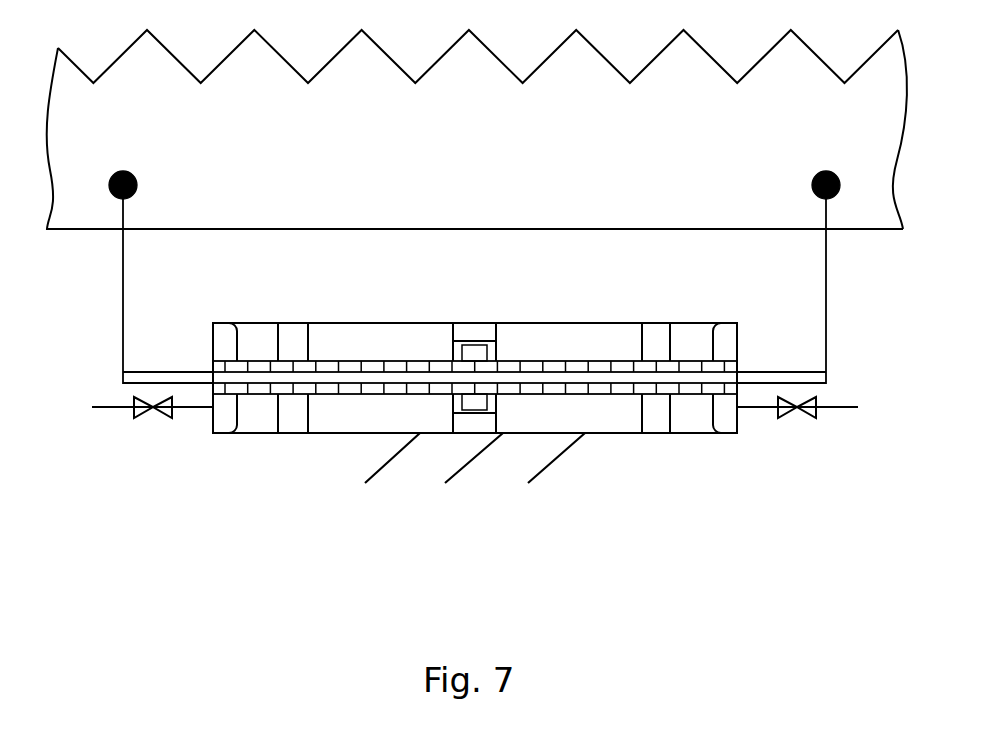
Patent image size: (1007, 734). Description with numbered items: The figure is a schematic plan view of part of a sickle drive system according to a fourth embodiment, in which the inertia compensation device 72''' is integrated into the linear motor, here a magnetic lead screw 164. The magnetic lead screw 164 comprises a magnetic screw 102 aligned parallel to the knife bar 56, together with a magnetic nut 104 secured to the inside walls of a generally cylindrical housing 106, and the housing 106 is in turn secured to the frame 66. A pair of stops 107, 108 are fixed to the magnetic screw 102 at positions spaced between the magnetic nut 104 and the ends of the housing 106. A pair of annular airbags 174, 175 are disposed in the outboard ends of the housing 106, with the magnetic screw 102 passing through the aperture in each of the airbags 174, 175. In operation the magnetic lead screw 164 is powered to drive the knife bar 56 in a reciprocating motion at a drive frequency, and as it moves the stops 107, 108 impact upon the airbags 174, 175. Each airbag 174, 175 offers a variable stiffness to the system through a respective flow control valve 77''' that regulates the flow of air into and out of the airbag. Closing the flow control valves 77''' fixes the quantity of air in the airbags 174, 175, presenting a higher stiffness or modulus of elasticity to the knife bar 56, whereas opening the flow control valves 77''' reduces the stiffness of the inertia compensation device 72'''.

The knife bar 56 is at (883, 130).
The inertia compensation device 72''' is at (475, 451).
The magnetic lead screw 164 is at (603, 437).
The housing 106 is at (333, 436).
The magnetic screw 102 is at (567, 375).
The annular airbag 174 is at (225, 342).
The annular airbag 175 is at (725, 340).
The stop 107 is at (292, 340).
The stop 108 is at (656, 340).
The magnetic nut 104 is at (473, 340).
The frame 66 is at (378, 478).
The flow control valve 77''' is at (475, 446).